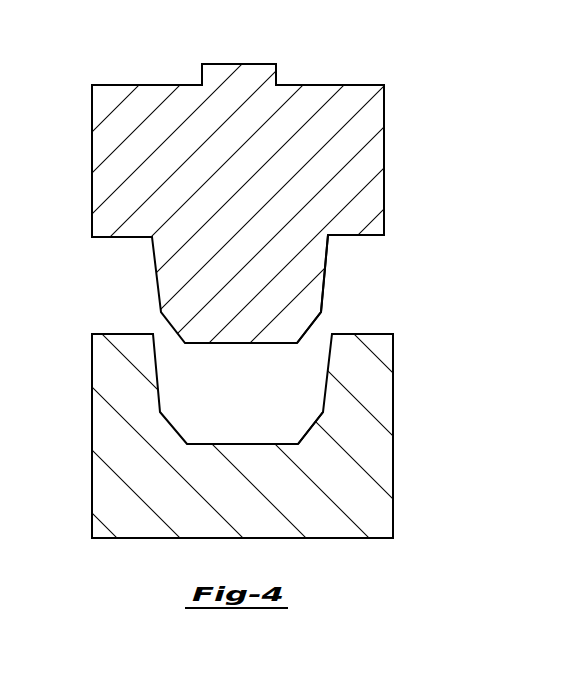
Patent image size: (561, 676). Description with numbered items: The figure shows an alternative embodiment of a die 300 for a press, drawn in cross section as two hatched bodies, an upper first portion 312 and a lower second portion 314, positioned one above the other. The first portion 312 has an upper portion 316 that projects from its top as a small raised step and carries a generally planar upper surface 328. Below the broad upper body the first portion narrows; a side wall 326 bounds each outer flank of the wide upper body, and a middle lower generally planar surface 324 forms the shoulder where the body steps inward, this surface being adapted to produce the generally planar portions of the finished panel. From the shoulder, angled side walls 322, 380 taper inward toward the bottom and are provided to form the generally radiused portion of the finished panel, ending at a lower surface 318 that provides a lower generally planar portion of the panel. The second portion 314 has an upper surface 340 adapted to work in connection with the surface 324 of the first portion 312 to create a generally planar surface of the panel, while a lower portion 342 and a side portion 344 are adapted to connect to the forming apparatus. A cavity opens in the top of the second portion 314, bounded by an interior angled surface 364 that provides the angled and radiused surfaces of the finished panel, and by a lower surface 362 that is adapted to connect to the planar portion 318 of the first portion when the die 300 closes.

The die 300 is at (49, 192).
The first portion 312 is at (373, 152).
The second portion 314 is at (372, 507).
The upper portion 316 is at (238, 63).
The lower surface 318 is at (243, 343).
The angled side wall 322 is at (320, 276).
The middle lower generally planar surface 324 is at (360, 236).
The side wall 326 is at (386, 197).
The upper surface 328 is at (327, 85).
The upper surface 340 is at (129, 333).
The lower portion 342 is at (313, 538).
The side portion 344 is at (393, 398).
The lower surface 362 is at (252, 443).
The interior angled surface 364 is at (310, 427).
The angled side wall 380 is at (312, 323).